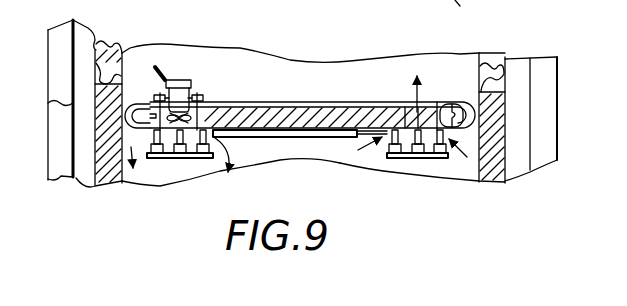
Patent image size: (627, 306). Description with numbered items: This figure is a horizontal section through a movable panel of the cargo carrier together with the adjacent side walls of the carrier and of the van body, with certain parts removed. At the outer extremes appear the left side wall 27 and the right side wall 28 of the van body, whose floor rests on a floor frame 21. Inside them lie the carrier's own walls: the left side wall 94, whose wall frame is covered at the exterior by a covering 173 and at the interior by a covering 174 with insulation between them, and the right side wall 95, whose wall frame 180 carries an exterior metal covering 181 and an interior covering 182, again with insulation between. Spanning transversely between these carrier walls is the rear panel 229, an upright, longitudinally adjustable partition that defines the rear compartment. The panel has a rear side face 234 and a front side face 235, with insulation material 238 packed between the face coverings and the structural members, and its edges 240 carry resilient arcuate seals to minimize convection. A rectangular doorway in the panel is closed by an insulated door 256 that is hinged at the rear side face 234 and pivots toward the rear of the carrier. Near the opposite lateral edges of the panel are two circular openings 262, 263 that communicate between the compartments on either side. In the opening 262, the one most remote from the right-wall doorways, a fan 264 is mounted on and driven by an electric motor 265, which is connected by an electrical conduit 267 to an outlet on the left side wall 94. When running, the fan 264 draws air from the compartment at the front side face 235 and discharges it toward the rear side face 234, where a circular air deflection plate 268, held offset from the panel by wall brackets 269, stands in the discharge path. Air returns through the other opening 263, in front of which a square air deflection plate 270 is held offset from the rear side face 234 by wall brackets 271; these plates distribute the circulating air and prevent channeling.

The floor frame 21 is at (470, 10).
The left side wall 27 is at (48, 162).
The right side wall 28 is at (558, 118).
The left side wall 94 is at (98, 43).
The right side wall 95 is at (507, 60).
The exterior covering 173 is at (86, 184).
The interior covering 174 is at (133, 183).
The wall frame 180 is at (478, 70).
The metal covering 181 is at (508, 165).
The interior covering 182 is at (481, 174).
The rear panel 229 is at (281, 106).
The rear side face 234 is at (353, 145).
The front side face 235 is at (394, 103).
The insulation material 238 is at (335, 108).
The panel edges 240 is at (130, 64).
The door 256 is at (262, 137).
The circular opening 262 is at (211, 78).
The circular opening 263 is at (428, 106).
The fan 264 is at (214, 99).
The electric motor 265 is at (203, 60).
The electrical conduit 267 is at (157, 68).
The circular air deflection plate 268 is at (163, 150).
The wall brackets 269 is at (233, 152).
The square air deflection plate 270 is at (398, 158).
The wall brackets 271 is at (442, 139).